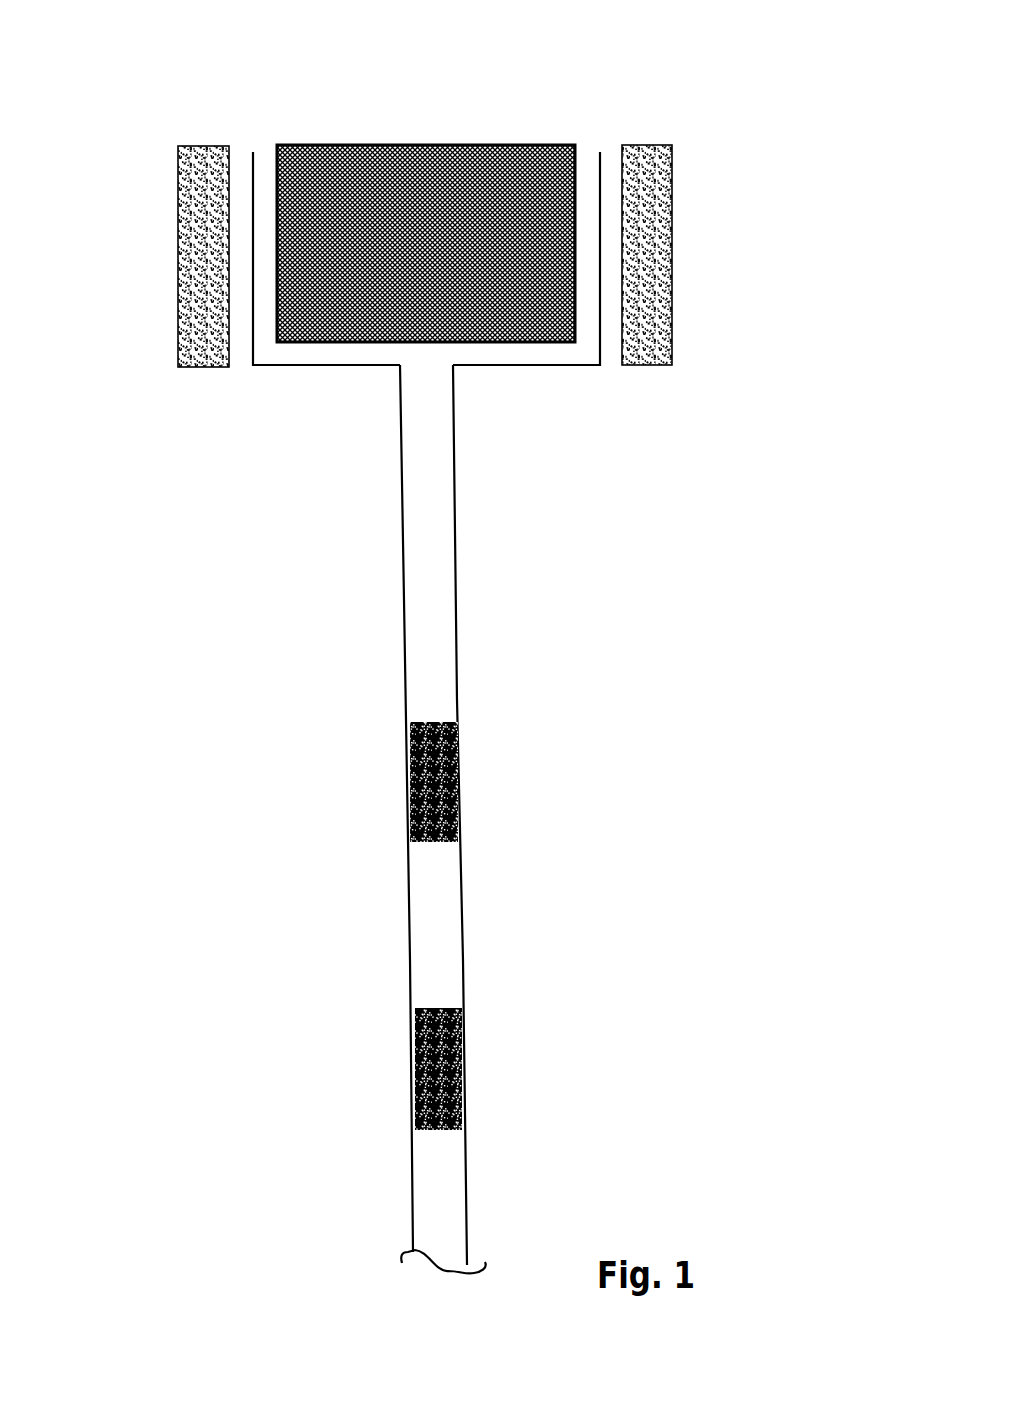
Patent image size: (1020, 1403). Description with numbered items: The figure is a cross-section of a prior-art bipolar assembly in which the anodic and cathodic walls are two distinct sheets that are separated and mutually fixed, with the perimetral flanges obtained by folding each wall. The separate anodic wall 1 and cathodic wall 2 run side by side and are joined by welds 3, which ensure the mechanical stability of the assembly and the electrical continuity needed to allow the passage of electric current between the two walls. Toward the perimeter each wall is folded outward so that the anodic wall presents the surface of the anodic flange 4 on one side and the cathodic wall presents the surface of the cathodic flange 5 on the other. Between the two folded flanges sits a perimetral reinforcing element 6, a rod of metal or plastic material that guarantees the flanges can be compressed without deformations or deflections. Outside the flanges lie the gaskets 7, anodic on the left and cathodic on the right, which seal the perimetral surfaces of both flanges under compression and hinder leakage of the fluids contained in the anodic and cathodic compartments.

The anodic wall 1 is at (404, 535).
The cathodic wall 2 is at (458, 535).
The welds 3 is at (455, 787).
The surface of the anodic flange 4 is at (255, 158).
The surface of the cathodic flange 5 is at (601, 157).
The perimetral reinforcing element 6 is at (448, 183).
The gaskets 7 is at (205, 270).